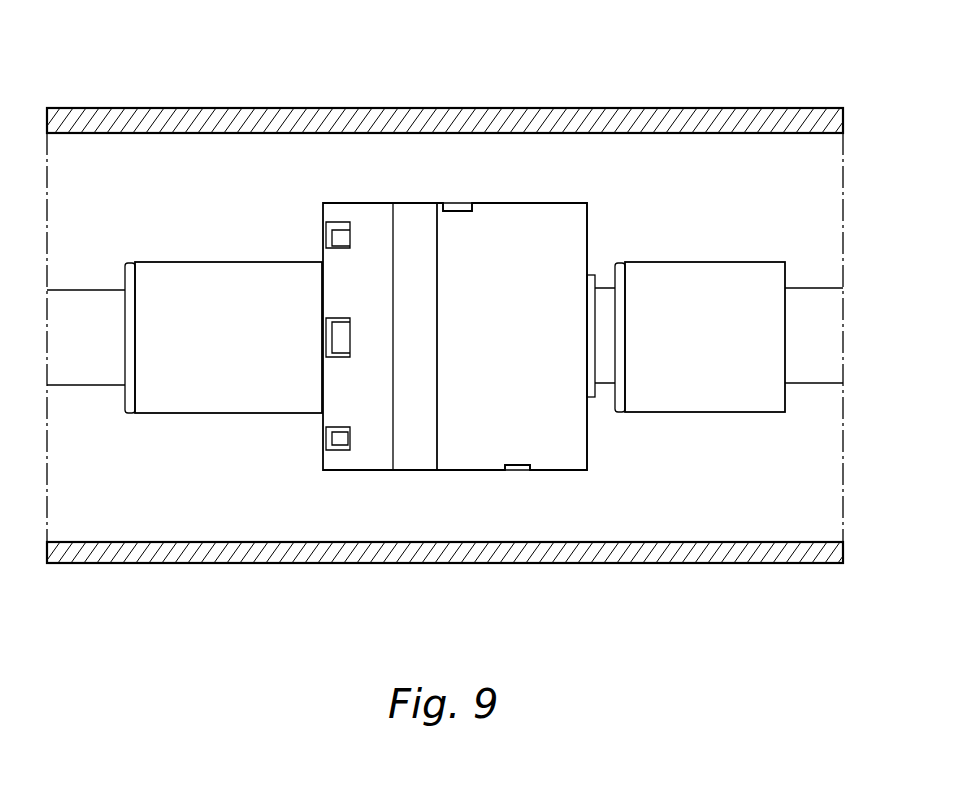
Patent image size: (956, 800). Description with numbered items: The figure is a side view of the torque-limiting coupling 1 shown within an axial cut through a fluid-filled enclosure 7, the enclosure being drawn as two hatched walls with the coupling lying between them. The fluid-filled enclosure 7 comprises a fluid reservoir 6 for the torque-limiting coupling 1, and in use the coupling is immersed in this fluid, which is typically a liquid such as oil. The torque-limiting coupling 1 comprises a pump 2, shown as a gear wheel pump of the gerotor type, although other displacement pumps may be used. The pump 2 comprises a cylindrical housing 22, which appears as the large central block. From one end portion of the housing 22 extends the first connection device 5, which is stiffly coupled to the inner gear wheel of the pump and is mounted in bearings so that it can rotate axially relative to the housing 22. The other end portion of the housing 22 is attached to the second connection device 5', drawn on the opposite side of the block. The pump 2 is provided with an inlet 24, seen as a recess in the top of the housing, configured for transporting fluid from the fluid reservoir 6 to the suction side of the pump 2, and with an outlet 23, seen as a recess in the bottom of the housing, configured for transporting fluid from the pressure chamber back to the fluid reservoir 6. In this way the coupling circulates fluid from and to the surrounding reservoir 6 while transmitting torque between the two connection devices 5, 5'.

The torque-limiting coupling 1 is at (448, 338).
The pump 2 is at (402, 480).
The first connection device 5 is at (184, 457).
The second connection device 5' is at (715, 457).
The fluid reservoir 6 is at (690, 170).
The fluid-filled enclosure 7 is at (172, 108).
The housing 22 is at (550, 405).
The outlet 23 is at (517, 466).
The inlet 24 is at (458, 211).